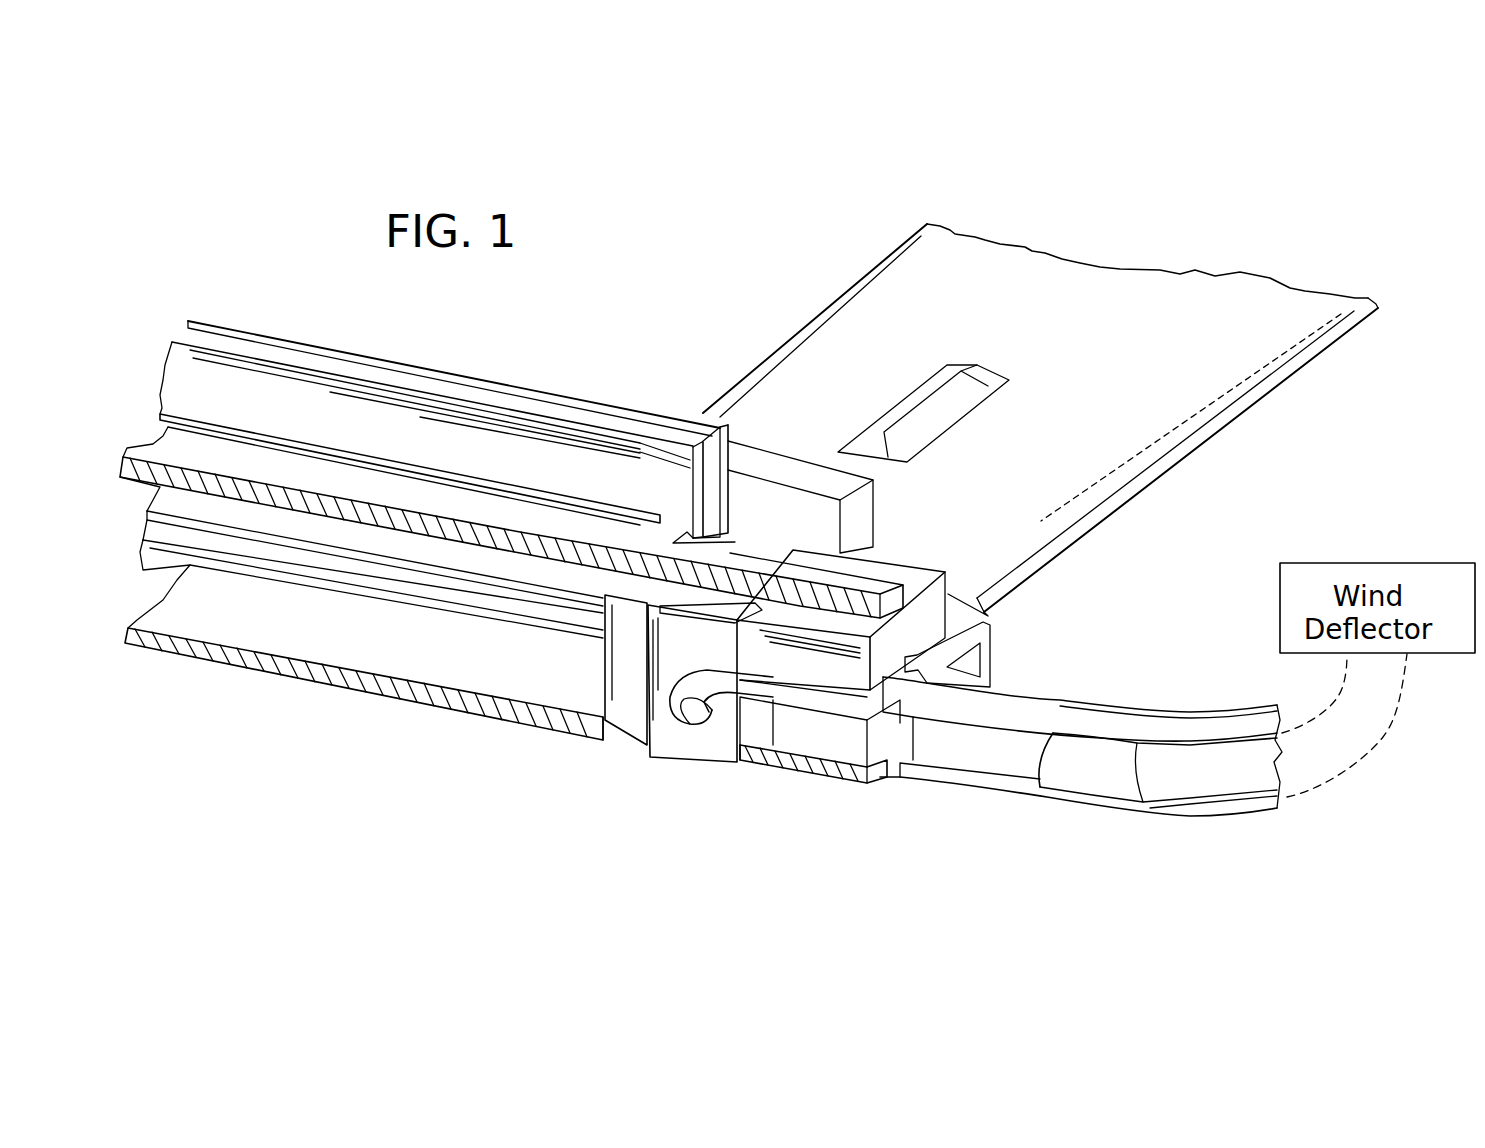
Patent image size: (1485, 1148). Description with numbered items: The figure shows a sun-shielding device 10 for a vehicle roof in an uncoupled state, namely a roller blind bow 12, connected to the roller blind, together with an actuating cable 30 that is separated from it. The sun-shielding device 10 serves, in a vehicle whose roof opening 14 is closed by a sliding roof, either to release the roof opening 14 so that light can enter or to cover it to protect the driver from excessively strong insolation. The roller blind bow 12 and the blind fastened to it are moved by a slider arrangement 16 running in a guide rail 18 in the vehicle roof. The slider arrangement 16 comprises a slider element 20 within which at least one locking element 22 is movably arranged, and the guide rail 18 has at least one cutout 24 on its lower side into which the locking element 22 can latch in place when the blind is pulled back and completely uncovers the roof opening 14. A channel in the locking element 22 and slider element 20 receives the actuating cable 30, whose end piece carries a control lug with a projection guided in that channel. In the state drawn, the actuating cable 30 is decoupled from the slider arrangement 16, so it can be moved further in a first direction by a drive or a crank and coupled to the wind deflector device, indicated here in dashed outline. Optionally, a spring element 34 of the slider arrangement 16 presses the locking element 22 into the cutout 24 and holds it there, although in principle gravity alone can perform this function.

The sun-shielding device 10 is at (1062, 238).
The roller blind bow 12 is at (1200, 310).
The roof opening 14 is at (749, 242).
The slider arrangement 16 is at (597, 680).
The guide rail 18 is at (340, 684).
The slider element 20 is at (830, 740).
The locking element 22 is at (683, 743).
The cutout 24 is at (737, 770).
The actuating cable 30 is at (1180, 760).
The spring element 34 is at (725, 592).